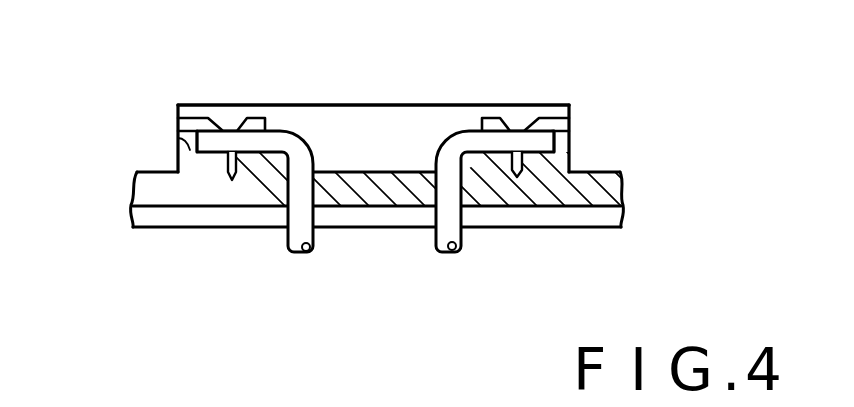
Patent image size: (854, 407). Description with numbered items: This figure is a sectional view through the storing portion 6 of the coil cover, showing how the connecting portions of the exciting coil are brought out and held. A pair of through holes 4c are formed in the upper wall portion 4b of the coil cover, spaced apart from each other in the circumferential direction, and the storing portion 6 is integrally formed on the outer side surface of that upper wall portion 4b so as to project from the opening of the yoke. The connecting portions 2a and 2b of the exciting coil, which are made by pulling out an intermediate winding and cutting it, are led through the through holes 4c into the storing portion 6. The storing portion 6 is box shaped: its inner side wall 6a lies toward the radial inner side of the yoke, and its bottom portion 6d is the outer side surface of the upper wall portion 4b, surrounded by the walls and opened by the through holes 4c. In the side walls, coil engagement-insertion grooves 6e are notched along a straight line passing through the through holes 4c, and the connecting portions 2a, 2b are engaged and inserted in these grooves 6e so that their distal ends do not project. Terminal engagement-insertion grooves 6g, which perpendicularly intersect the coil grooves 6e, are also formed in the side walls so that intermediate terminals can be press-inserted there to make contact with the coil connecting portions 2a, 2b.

The connecting portion 2a is at (295, 143).
The connecting portion 2b is at (455, 142).
The upper wall portion 4b is at (604, 176).
The through hole 4c is at (313, 188).
The storing portion 6 is at (562, 100).
The inner side wall 6a is at (425, 105).
The bottom portion 6d is at (368, 168).
The coil engagement-insertion groove 6e is at (190, 151).
The terminal engagement-insertion groove 6g is at (232, 181).